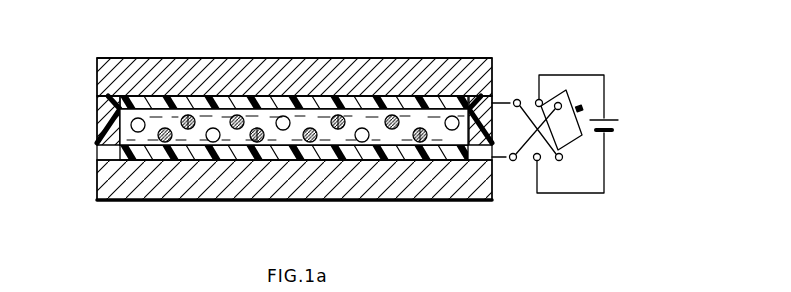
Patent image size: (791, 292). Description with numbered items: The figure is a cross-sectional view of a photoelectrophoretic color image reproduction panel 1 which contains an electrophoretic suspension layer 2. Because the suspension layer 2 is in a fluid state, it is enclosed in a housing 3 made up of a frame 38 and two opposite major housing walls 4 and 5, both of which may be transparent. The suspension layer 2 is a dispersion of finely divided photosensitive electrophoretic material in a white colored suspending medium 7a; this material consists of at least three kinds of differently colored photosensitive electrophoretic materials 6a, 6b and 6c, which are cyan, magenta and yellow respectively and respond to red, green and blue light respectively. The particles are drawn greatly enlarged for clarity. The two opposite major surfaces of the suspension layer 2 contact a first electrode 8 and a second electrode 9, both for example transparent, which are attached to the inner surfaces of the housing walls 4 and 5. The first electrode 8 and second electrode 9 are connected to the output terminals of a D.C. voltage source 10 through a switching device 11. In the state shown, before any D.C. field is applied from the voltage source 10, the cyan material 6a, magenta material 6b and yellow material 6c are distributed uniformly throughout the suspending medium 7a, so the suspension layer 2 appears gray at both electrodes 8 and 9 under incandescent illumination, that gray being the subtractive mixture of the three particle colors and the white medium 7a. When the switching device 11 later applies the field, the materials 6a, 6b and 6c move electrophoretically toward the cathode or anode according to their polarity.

The photoelectrophoretic color image reproduction panel 1 is at (265, 50).
The electrophoretic suspension layer 2 is at (293, 174).
The housing 3 is at (90, 50).
The major housing wall 4 is at (97, 70).
The major housing wall 5 is at (97, 181).
The cyan photosensitive electrophoretic material 6a is at (138, 133).
The magenta photosensitive electrophoretic material 6b is at (165, 142).
The yellow photosensitive electrophoretic material 6c is at (188, 130).
The suspending medium 7a is at (240, 140).
The first electrode 8 is at (97, 97).
The second electrode 9 is at (97, 153).
The D.C. voltage source 10 is at (616, 112).
The switching device 11 is at (526, 92).
The frame 38 is at (97, 122).